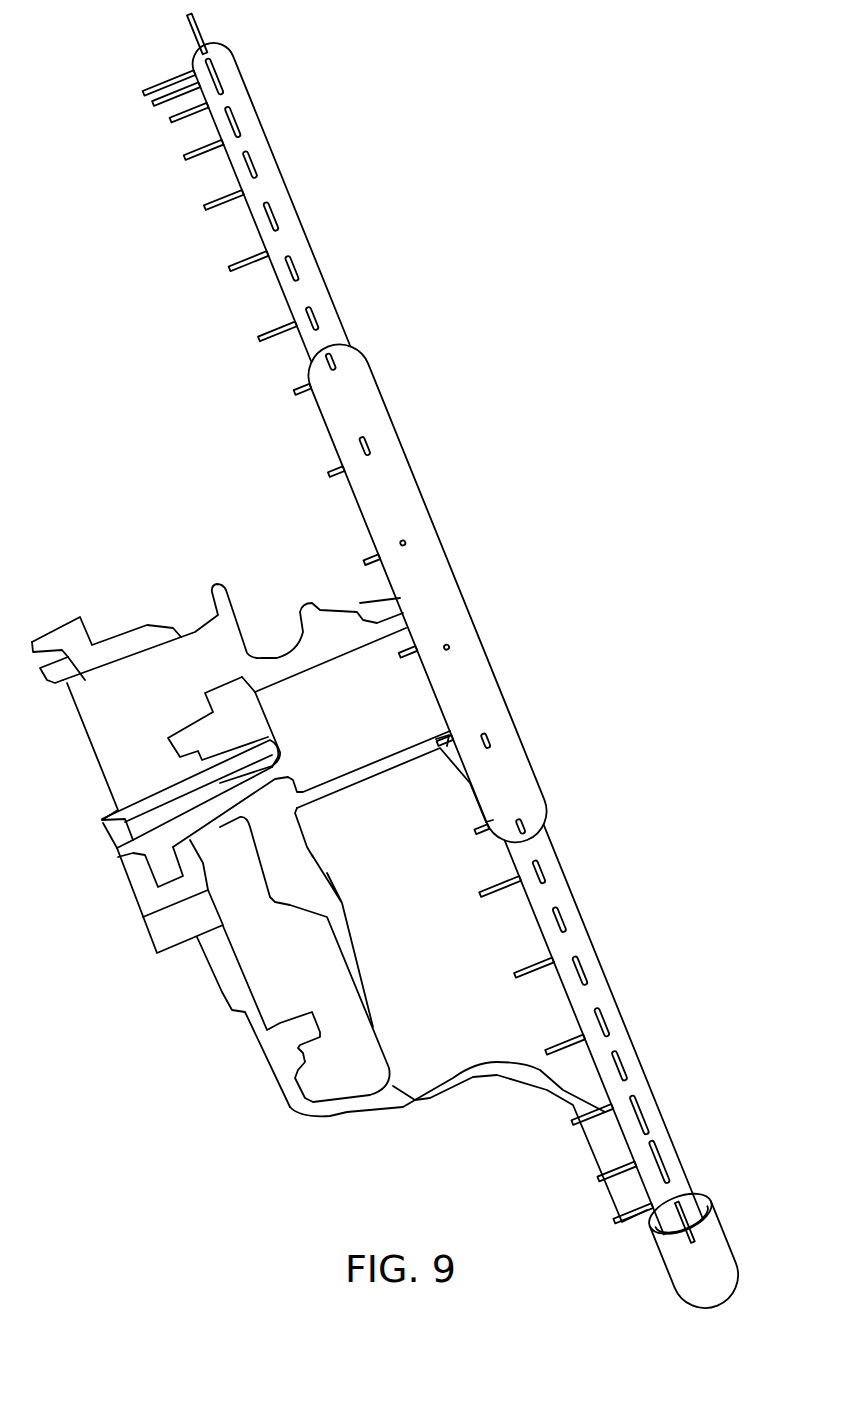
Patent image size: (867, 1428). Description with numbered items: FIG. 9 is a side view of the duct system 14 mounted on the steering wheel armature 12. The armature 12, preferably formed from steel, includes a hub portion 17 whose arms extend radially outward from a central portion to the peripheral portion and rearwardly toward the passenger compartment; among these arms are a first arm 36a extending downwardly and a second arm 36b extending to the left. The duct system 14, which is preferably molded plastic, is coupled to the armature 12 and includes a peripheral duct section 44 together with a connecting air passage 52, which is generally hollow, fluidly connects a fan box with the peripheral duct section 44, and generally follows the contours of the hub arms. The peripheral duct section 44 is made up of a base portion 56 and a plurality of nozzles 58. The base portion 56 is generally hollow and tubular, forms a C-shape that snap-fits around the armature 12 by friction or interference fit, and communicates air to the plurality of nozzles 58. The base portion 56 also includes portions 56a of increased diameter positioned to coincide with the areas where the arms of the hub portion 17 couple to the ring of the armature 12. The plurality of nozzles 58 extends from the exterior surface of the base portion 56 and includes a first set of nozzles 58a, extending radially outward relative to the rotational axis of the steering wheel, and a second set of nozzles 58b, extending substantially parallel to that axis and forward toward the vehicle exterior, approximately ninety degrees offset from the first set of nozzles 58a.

The armature 12 is at (190, 622).
The duct system 14 is at (418, 488).
The hub portion 17 is at (120, 722).
The first arm 36a is at (488, 1082).
The second arm 36b is at (378, 780).
The peripheral duct section 44 is at (595, 942).
The air passage 52 is at (283, 697).
The base portion 56 is at (232, 80).
The increased diameter portion 56a is at (475, 693).
The plurality of nozzles 58 is at (280, 215).
The first set of nozzles 58a is at (200, 31).
The second set of nozzles 58b is at (165, 72).